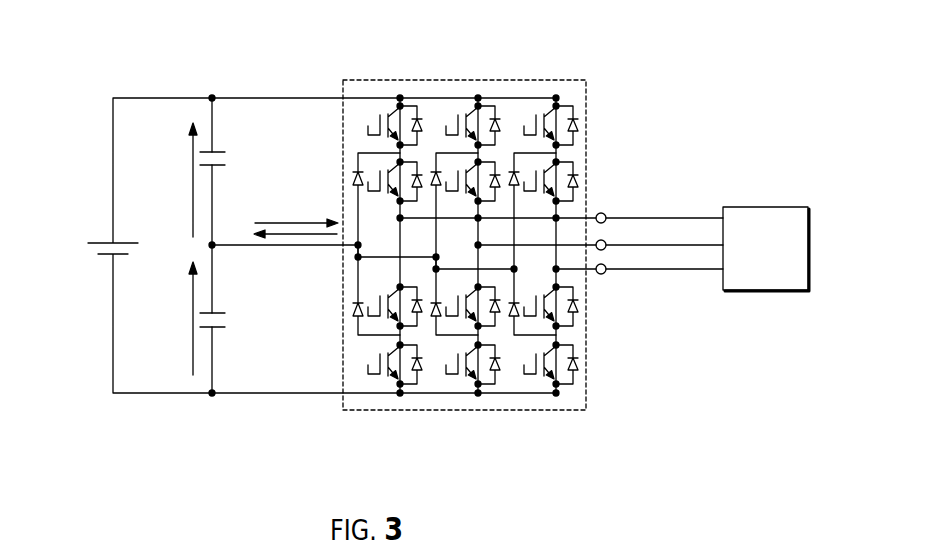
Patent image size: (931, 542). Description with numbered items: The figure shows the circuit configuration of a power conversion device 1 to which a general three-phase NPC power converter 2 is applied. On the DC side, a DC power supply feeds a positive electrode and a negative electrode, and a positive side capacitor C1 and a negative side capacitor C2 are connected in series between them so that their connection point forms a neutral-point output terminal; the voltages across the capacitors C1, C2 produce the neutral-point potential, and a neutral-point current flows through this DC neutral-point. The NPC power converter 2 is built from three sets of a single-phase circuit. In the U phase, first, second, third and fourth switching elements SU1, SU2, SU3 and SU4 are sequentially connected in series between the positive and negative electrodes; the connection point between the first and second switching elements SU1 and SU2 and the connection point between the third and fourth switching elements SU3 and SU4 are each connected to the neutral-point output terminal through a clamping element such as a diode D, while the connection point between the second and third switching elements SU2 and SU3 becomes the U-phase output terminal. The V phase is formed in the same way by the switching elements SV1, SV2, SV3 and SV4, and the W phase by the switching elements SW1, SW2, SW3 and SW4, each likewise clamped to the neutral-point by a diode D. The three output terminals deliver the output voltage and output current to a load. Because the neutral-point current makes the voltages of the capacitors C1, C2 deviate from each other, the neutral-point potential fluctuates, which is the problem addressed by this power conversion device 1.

The power conversion device 1 is at (183, 57).
The NPC power converter 2 is at (587, 113).
The positive side capacitor C1 is at (220, 174).
The negative side capacitor C2 is at (219, 307).
The diode D is at (352, 307).
The first switching element SU1 is at (401, 102).
The second switching element SU2 is at (423, 172).
The third switching element SU3 is at (413, 326).
The fourth switching element SU4 is at (409, 386).
The first switching element of V phase SV1 is at (485, 102).
The second switching element of V phase SV2 is at (500, 172).
The third switching element of V phase SV3 is at (495, 327).
The fourth switching element of V phase SV4 is at (487, 386).
The first switching element of W phase SW1 is at (566, 102).
The second switching element of W phase SW2 is at (575, 164).
The third switching element of W phase SW3 is at (574, 323).
The fourth switching element of W phase SW4 is at (565, 386).